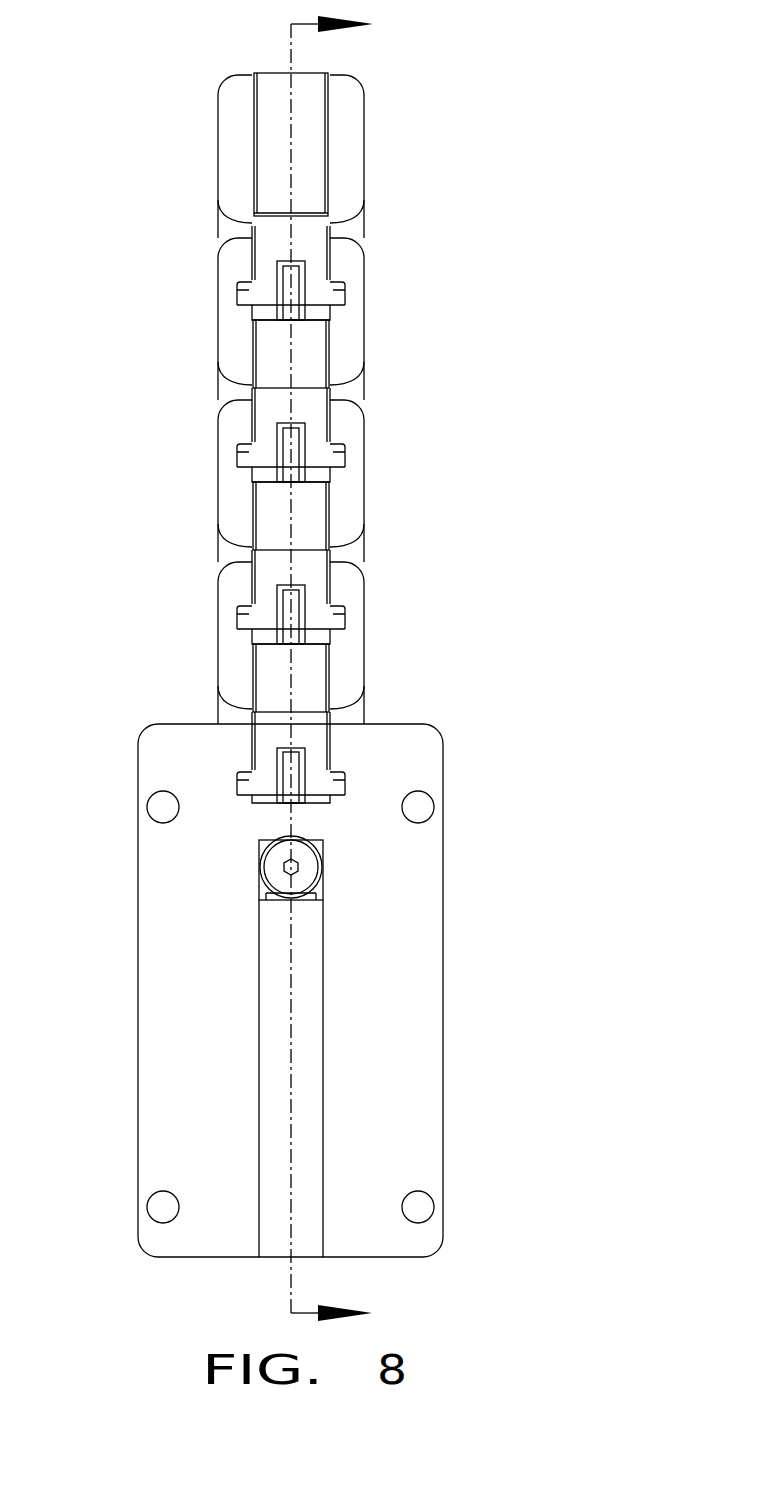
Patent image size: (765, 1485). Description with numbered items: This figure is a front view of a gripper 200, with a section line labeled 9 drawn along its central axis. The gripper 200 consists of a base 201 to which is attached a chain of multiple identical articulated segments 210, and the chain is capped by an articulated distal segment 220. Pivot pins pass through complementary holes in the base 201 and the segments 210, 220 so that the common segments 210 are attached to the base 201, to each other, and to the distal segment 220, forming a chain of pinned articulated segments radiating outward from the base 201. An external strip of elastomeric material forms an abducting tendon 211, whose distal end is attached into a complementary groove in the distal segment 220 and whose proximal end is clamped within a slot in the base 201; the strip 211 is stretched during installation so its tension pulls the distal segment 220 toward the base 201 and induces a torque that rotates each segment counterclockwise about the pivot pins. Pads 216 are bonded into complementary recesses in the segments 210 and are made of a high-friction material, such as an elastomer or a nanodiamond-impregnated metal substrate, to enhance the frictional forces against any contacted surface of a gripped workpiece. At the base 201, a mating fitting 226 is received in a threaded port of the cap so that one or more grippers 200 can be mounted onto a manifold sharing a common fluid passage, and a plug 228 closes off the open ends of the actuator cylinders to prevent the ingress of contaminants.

The gripper 200 is at (173, 394).
The base 201 is at (443, 1027).
The articulated segments 210 is at (364, 276).
The abducting tendon 211 is at (304, 128).
The pads 216 is at (310, 342).
The distal segment 220 is at (364, 156).
The fitting 226 is at (276, 872).
The plug 228 is at (272, 1207).
The section line 9 is at (342, 670).